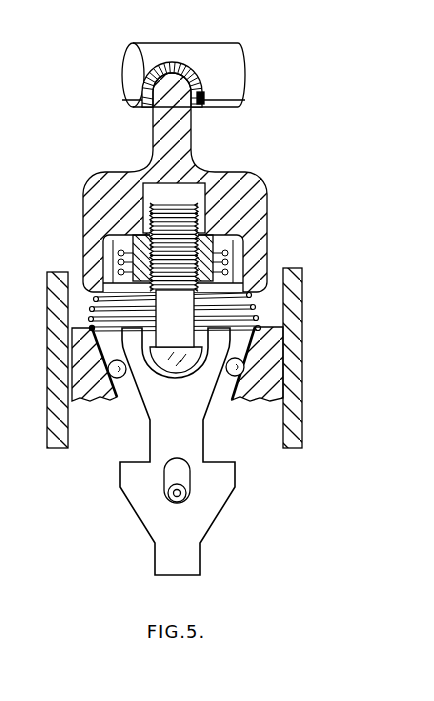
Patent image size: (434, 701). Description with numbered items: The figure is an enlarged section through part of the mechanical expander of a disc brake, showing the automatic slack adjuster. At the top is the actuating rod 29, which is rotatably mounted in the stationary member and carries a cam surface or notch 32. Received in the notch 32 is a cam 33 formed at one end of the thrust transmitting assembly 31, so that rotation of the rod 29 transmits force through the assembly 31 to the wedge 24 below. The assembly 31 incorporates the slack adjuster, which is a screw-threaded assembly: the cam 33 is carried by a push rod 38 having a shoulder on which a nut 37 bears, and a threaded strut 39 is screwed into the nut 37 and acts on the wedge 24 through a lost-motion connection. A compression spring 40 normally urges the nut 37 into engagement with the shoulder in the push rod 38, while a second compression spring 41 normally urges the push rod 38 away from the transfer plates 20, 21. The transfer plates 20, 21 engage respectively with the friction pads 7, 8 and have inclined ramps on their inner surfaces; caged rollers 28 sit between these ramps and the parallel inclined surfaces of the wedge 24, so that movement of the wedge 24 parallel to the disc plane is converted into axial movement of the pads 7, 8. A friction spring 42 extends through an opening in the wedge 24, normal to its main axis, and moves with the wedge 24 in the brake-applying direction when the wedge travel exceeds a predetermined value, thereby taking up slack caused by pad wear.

The actuating rod 29 is at (197, 62).
The cam surface or notch 32 is at (204, 92).
The cam 33 is at (168, 118).
The push rod 38 is at (227, 183).
The thrust transmitting assembly 31 is at (250, 190).
The nut 37 is at (140, 228).
The compression spring 40 is at (122, 267).
The second compression spring 41 is at (252, 297).
The caged rollers 28 is at (112, 377).
The transfer plate 20 is at (82, 383).
The transfer plate 21 is at (263, 387).
The threaded strut 39 is at (168, 333).
The friction pad 7 is at (63, 428).
The friction pad 8 is at (297, 430).
The friction spring 42 is at (172, 492).
The wedge 24 is at (178, 555).